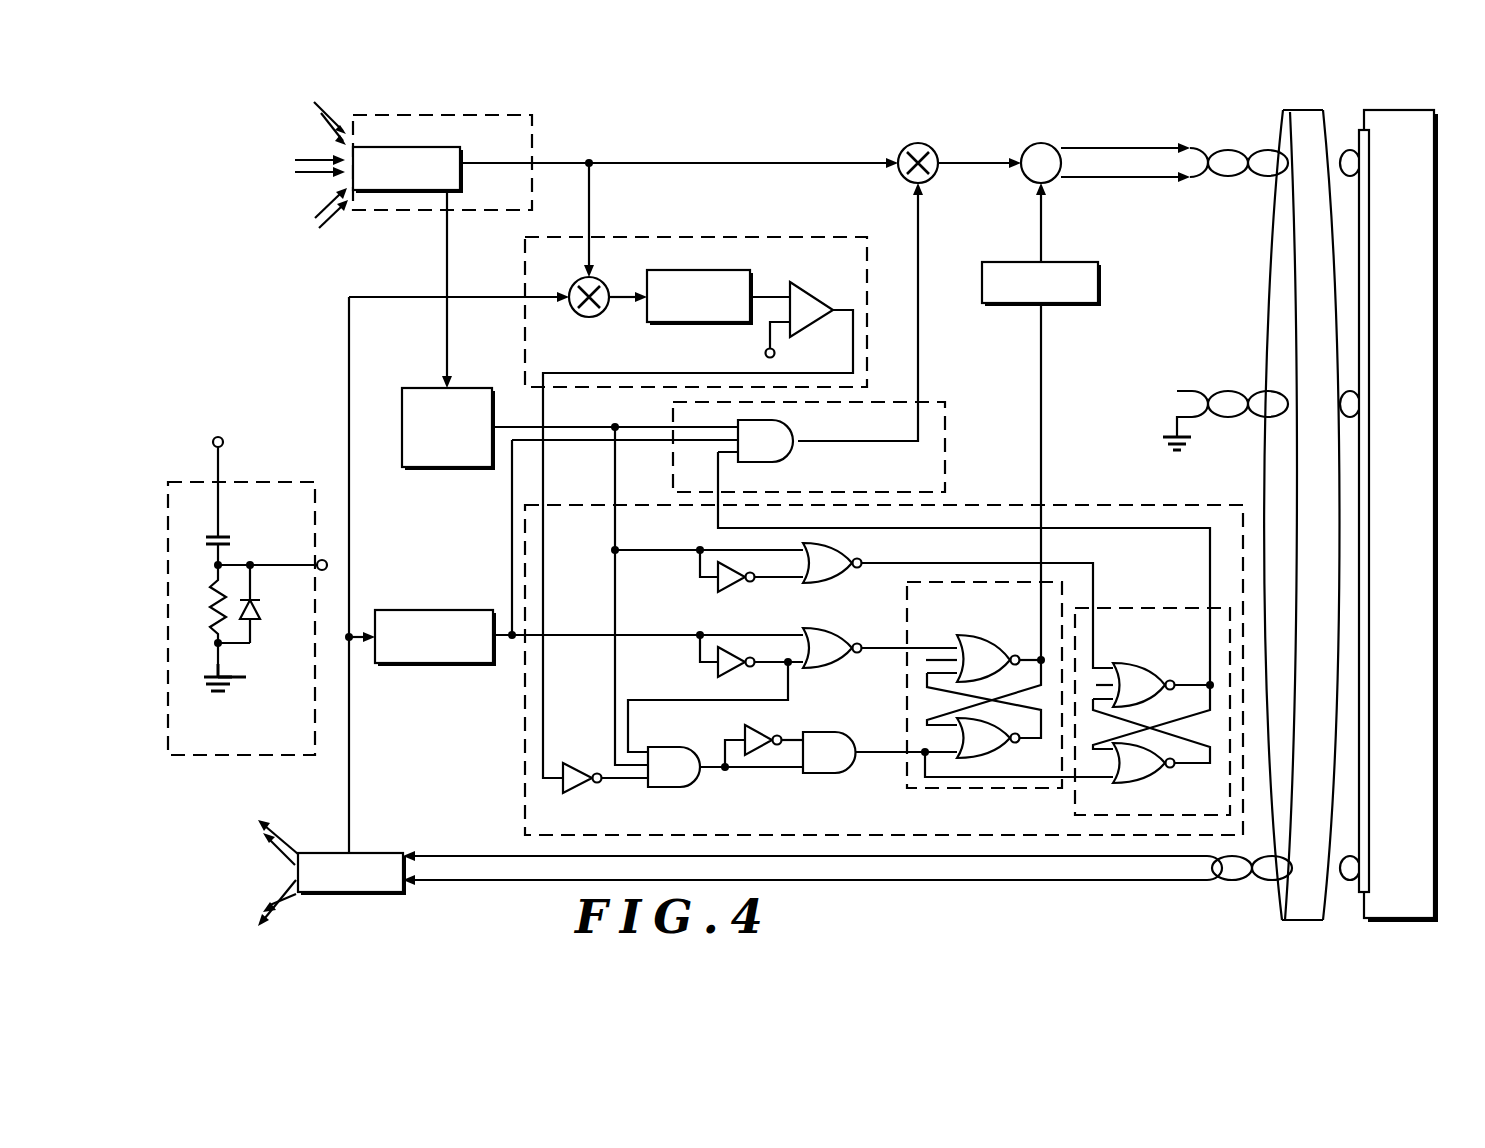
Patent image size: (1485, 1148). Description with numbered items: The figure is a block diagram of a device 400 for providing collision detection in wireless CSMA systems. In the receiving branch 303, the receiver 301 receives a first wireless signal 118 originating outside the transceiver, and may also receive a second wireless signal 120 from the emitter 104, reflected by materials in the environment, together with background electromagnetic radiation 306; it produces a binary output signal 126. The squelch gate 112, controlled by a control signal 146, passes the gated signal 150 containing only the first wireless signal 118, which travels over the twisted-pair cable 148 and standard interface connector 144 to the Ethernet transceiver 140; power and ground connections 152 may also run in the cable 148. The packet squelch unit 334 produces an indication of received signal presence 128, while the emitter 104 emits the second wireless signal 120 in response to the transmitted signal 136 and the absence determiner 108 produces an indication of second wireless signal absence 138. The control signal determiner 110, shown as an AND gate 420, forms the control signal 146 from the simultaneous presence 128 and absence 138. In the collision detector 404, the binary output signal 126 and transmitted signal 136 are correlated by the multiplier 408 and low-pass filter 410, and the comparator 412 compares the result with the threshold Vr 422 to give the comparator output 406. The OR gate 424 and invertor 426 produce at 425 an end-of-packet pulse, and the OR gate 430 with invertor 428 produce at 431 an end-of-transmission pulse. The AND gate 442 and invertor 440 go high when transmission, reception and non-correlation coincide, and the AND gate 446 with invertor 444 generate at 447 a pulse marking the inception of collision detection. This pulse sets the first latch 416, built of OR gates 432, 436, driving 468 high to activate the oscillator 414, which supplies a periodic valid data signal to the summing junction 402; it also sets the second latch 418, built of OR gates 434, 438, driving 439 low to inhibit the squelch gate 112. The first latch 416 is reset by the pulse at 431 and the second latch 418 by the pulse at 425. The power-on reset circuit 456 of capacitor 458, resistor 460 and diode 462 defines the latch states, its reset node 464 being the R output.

The emitter 104 is at (353, 890).
The absence determiner 108 is at (420, 575).
The control signal determiner 110 is at (834, 447).
The squelch gate 112 is at (902, 146).
The first wireless signal 118 is at (305, 123).
The second wireless signal 120 is at (306, 557).
The binary output signal 126 is at (679, 149).
The indication of received signal presence 128 is at (615, 410).
The transmitted signal 136 is at (881, 880).
The indication of second wireless signal absence 138 is at (847, 670).
The Ethernet transceiver 140 is at (1424, 516).
The standard interface connector 144 is at (1347, 491).
The control signal 146 is at (885, 312).
The twisted-pair cable 148 is at (1281, 522).
The gated signal 150 is at (1210, 145).
The power and ground connections 152 is at (1291, 400).
The receiver 301 is at (434, 177).
The receiving branch 303 is at (473, 162).
The background electromagnetic radiation 306 is at (291, 184).
The packet squelch unit 334 is at (444, 351).
The device for providing collision detection 400 is at (864, 918).
The summing junction 402 is at (1047, 146).
The collision detector 404 is at (696, 295).
The comparator output 406 is at (698, 544).
The multiplier 408 is at (479, 259).
The low-pass filter 410 is at (681, 313).
The comparator 412 is at (793, 322).
The oscillator 414 is at (1070, 244).
The first latch 416 is at (954, 691).
The second latch 418 is at (1152, 692).
The AND gate 420 is at (677, 436).
The predetermined threshold Vr 422 is at (737, 347).
The logic OR gate 424 is at (845, 574).
The end-of-packet pulse output 425 is at (988, 601).
The invertor 426 is at (751, 584).
The invertor 428 is at (715, 693).
The logic OR gate 430 is at (832, 669).
The end-of-transmission pulse output 431 is at (910, 628).
The logic OR gate 432 is at (977, 671).
The logic OR gate 434 is at (1147, 696).
The logic OR gate 436 is at (1000, 747).
The logic OR gate 438 is at (1153, 780).
The second latch output 439 is at (964, 568).
The invertor 440 is at (605, 790).
The logic AND gate 442 is at (724, 787).
The invertor 444 is at (766, 735).
The logic AND gate 446 is at (829, 773).
The collision detection pulse output 447 is at (985, 744).
The power-on reset circuit 456 is at (241, 582).
The capacitor 458 is at (201, 532).
The resistor 460 is at (200, 604).
The diode 462 is at (258, 614).
The reset node 464 is at (272, 550).
The first latch output 468 is at (1010, 481).